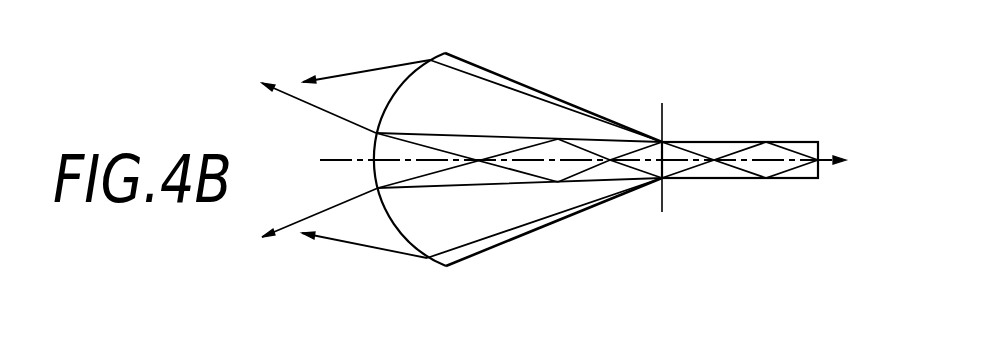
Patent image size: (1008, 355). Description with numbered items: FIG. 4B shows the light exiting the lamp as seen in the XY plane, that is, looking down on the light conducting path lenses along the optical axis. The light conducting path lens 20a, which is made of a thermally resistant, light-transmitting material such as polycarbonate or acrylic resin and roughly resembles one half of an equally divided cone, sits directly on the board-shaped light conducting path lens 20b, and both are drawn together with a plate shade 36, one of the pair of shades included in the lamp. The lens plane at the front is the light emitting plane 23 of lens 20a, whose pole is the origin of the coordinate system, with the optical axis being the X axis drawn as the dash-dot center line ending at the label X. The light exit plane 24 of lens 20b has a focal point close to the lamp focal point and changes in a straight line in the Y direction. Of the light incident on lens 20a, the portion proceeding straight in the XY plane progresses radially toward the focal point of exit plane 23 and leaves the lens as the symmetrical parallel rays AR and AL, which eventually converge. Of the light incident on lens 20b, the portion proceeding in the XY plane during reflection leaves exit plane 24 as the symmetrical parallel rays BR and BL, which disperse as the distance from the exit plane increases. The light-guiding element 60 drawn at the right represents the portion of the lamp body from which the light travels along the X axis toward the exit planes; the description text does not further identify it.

The light emitting plane 23 is at (403, 80).
The light conducting path lens 20a is at (497, 74).
The light conducting path lens 20b is at (572, 174).
The light exit plane 24 is at (371, 143).
The plate shade 36 is at (663, 122).
The light guide rod 60 is at (727, 180).
The X axis X is at (861, 162).
The parallel ray AR is at (342, 76).
The parallel ray BR is at (288, 94).
The parallel ray AL is at (350, 243).
The parallel ray BL is at (290, 226).